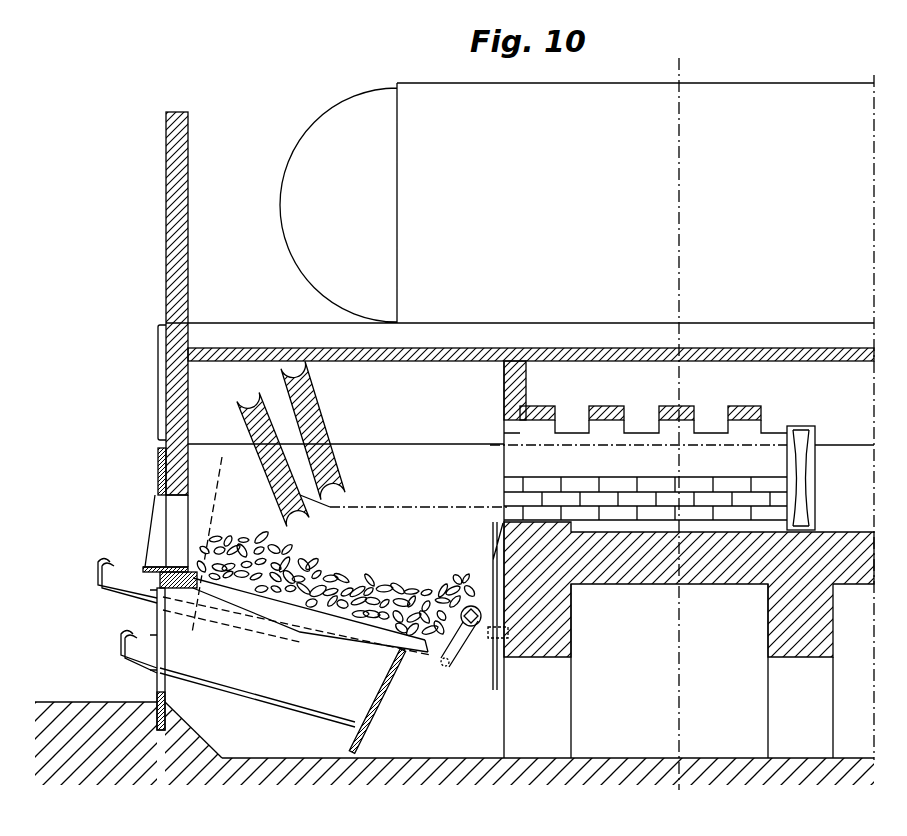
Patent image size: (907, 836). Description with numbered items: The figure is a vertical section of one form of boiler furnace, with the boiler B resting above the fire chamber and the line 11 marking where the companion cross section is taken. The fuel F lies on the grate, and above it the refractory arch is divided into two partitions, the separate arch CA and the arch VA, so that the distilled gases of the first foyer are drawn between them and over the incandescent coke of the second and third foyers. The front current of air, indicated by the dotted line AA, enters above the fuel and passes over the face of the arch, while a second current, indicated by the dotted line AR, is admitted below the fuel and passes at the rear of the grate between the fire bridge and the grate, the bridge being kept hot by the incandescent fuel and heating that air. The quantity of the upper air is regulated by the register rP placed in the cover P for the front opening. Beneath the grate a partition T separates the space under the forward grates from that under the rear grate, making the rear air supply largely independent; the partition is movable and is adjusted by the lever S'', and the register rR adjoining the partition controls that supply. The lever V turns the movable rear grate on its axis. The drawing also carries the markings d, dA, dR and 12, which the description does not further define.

The boiler B is at (150, 345).
The section line 11 is at (681, 422).
The separate arch CA is at (262, 477).
The arch VA is at (338, 488).
The front air draft AA is at (213, 486).
The rear air draft AR is at (495, 558).
The fuel F is at (374, 582).
The grate d is at (310, 623).
The grate axis dA is at (296, 626).
The partition T is at (393, 674).
The register rR is at (385, 702).
The grate roller dR is at (461, 637).
The stop 12 is at (498, 633).
The cover P is at (170, 541).
The register rP is at (153, 511).
The lever V is at (127, 581).
The lever S'' is at (127, 650).